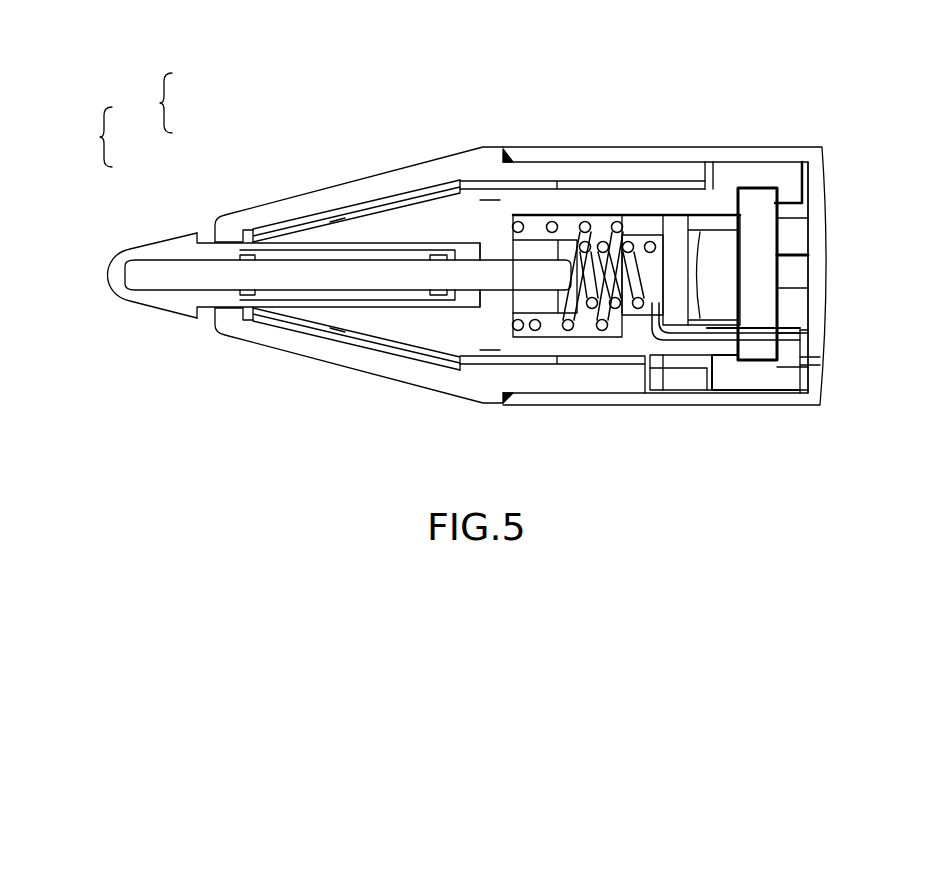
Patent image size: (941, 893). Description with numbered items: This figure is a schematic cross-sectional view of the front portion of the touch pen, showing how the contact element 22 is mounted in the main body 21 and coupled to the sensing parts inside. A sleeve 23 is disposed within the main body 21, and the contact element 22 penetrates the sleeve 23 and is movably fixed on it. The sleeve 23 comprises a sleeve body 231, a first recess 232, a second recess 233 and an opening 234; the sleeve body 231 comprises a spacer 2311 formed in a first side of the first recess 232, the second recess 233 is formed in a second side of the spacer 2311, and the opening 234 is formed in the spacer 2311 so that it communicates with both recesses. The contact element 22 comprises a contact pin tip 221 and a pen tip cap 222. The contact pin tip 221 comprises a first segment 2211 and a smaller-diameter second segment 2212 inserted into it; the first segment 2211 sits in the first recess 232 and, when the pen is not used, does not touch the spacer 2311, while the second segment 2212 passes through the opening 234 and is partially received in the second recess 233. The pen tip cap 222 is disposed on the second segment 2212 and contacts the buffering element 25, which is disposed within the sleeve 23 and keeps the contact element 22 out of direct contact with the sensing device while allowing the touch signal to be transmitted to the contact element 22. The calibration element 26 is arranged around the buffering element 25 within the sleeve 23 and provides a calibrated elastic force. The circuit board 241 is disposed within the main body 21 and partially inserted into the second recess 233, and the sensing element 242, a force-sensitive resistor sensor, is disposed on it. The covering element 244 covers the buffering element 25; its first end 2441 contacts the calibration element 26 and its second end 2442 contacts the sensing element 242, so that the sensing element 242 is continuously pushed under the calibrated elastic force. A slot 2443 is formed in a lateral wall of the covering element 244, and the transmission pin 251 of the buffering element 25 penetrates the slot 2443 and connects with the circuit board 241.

The main body 21 is at (653, 157).
The contact element 22 is at (89, 137).
The contact pin tip 221 is at (142, 103).
The first segment 2211 is at (200, 352).
The second segment 2212 is at (277, 378).
The pen tip cap 222 is at (540, 315).
The sleeve 23 is at (387, 334).
The sleeve body 231 is at (348, 233).
The spacer 2311 is at (497, 245).
The first recess 232 is at (460, 240).
The second recess 233 is at (560, 213).
The opening 234 is at (460, 322).
The circuit board 241 is at (813, 318).
The sensing element 242 is at (723, 290).
The covering element 244 is at (663, 227).
The first end 2441 is at (620, 217).
The second end 2442 is at (705, 327).
The slot 2443 is at (687, 320).
The buffering element 25 is at (657, 325).
The transmission pin 251 is at (784, 343).
The calibration element 26 is at (593, 323).